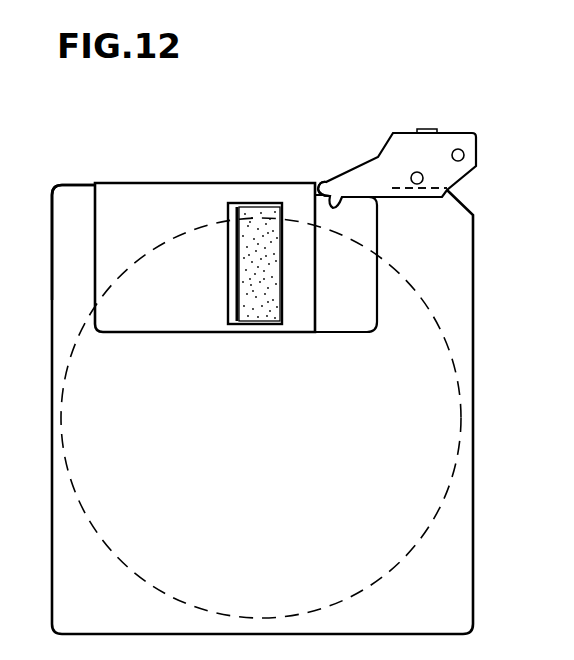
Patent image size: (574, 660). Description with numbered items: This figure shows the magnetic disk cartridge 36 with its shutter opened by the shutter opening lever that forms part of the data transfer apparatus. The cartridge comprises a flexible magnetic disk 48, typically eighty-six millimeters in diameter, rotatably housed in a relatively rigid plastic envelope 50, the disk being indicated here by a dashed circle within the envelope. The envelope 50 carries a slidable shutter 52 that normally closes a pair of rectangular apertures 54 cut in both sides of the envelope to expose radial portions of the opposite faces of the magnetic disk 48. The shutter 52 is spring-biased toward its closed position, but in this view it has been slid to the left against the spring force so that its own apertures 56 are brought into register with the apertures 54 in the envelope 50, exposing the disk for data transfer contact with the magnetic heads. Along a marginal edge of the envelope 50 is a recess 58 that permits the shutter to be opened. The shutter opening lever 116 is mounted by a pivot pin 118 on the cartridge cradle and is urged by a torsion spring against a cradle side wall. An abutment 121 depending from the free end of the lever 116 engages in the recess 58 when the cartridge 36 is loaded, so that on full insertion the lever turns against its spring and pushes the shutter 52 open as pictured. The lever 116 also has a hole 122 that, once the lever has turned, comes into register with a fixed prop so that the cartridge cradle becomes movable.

The magnetic disk cartridge 36 is at (57, 183).
The flexible magnetic disk 48 is at (432, 321).
The envelope 50 is at (465, 523).
The shutter 52 is at (172, 187).
The apertures 54 is at (235, 204).
The shutter apertures 56 is at (278, 310).
The recess 58 is at (388, 193).
The shutter opening lever 116 is at (447, 143).
The pivot pin 118 is at (464, 155).
The abutment 121 is at (330, 189).
The hole 122 is at (424, 179).